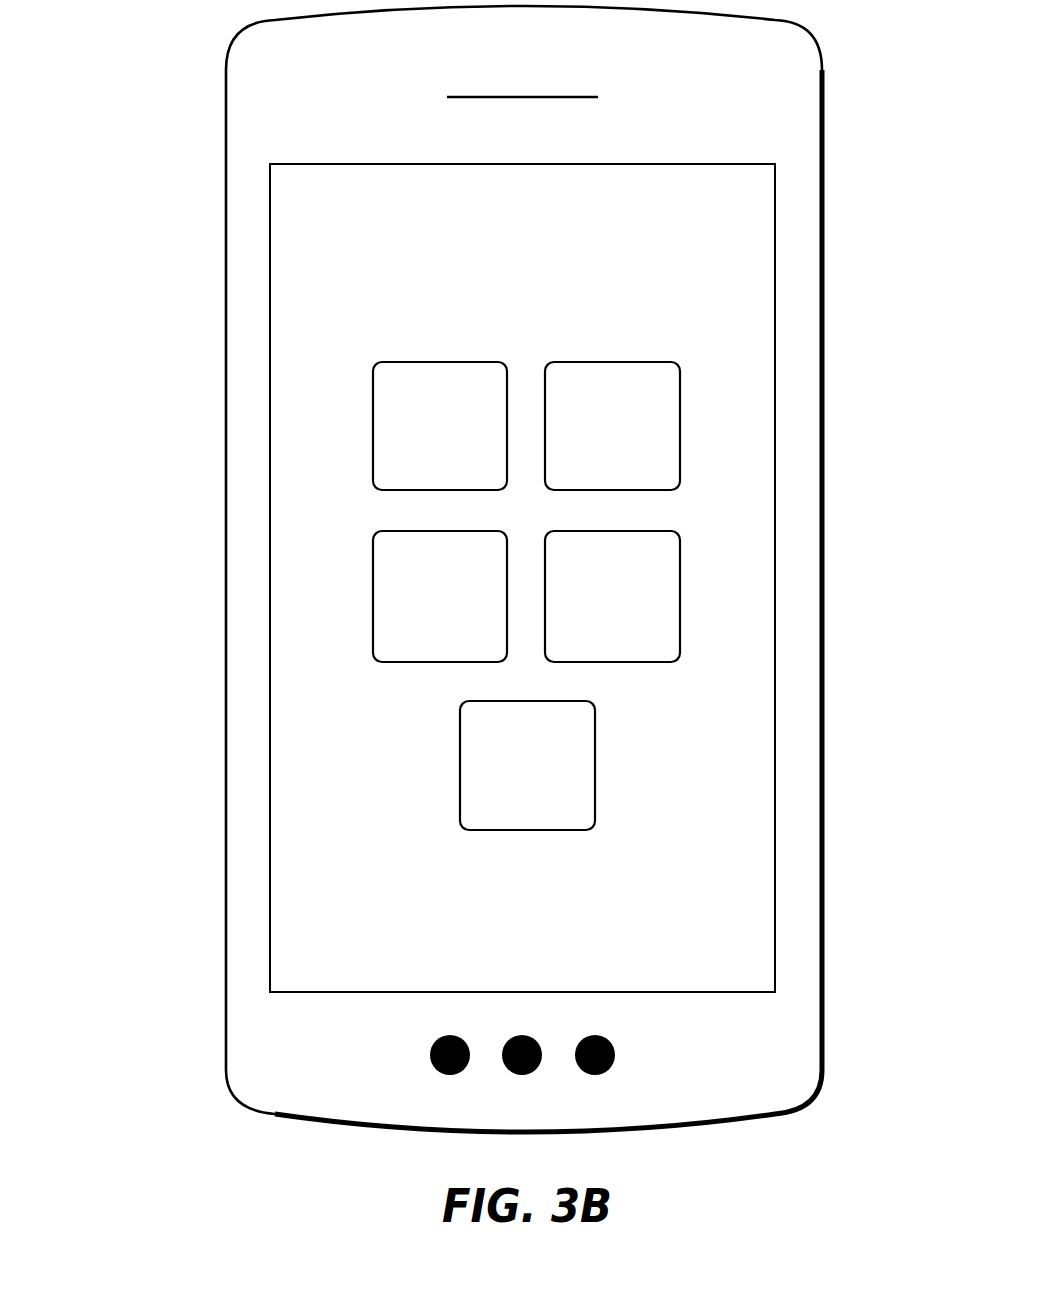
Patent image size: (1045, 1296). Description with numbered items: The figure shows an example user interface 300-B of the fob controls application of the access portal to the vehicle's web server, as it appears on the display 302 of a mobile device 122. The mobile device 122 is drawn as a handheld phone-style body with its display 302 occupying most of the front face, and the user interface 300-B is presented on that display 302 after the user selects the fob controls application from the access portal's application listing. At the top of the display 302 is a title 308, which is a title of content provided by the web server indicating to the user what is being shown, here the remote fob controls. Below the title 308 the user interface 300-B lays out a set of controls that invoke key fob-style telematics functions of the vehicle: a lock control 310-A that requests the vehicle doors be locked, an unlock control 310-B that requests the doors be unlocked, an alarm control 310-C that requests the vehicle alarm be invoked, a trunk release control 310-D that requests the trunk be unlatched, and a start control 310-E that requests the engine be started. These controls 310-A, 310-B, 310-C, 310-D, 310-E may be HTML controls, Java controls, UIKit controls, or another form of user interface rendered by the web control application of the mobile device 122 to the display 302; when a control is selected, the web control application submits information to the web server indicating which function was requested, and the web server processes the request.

The user interface 300-B is at (148, 24).
The mobile device 122 is at (822, 836).
The display 302 is at (776, 666).
The title 308 is at (690, 213).
The lock control 310-A is at (372, 425).
The unlock control 310-B is at (679, 425).
The alarm control 310-C is at (372, 595).
The trunk release control 310-D is at (679, 597).
The start control 310-E is at (460, 766).